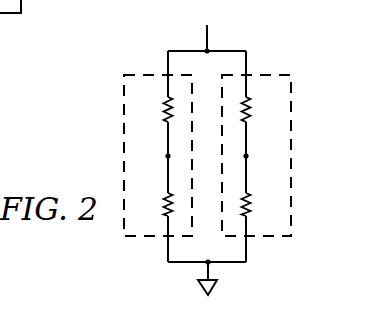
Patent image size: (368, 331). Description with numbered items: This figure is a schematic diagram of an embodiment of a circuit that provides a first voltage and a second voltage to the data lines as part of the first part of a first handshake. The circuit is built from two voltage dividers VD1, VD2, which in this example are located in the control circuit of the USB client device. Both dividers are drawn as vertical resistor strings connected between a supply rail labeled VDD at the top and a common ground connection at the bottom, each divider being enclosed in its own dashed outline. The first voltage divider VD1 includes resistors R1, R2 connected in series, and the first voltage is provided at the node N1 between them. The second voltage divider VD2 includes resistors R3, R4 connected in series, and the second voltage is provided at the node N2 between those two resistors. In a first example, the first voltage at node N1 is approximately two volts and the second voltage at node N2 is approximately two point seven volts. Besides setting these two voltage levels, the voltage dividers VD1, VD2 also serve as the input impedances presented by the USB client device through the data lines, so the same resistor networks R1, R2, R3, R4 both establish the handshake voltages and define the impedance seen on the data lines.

The supply voltage node VDD is at (206, 29).
The first voltage divider VD1 is at (124, 137).
The second voltage divider VD2 is at (291, 138).
The resistor R1 is at (157, 109).
The resistor R2 is at (156, 204).
The resistor R3 is at (259, 109).
The resistor R4 is at (259, 204).
The node N1 is at (156, 155).
The node N2 is at (258, 155).